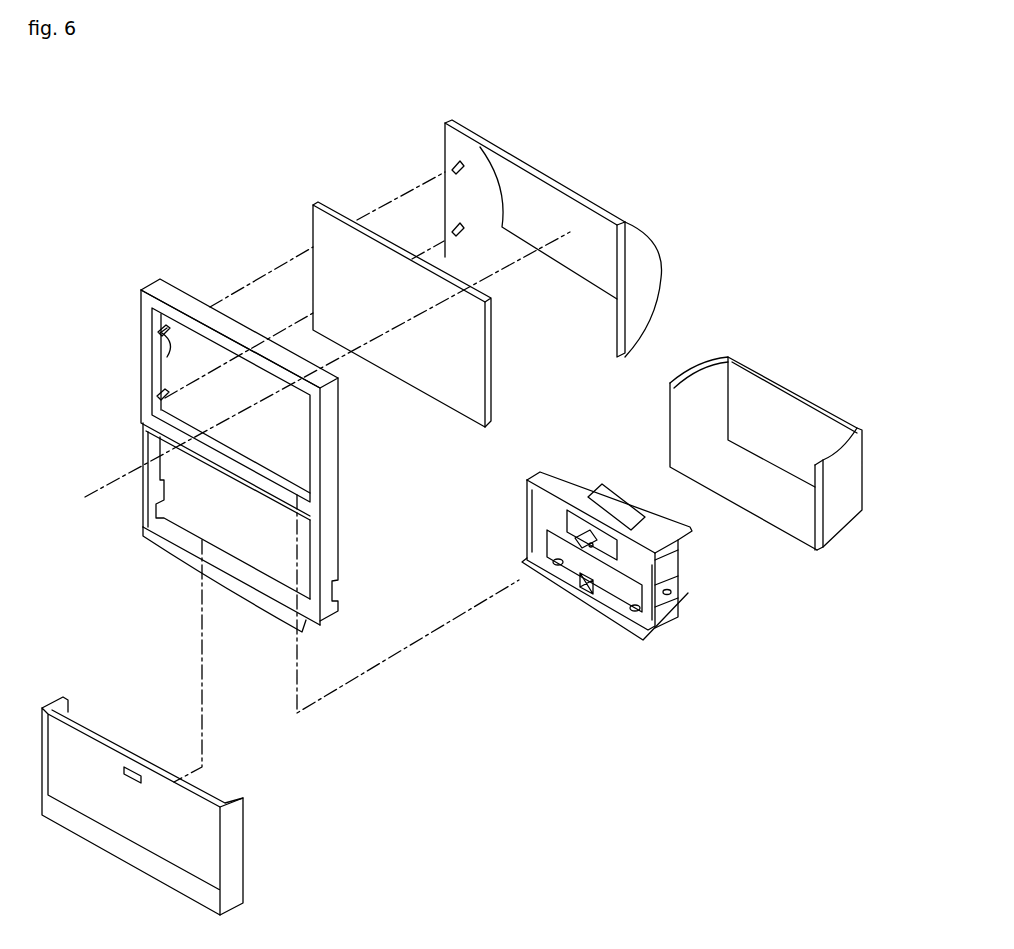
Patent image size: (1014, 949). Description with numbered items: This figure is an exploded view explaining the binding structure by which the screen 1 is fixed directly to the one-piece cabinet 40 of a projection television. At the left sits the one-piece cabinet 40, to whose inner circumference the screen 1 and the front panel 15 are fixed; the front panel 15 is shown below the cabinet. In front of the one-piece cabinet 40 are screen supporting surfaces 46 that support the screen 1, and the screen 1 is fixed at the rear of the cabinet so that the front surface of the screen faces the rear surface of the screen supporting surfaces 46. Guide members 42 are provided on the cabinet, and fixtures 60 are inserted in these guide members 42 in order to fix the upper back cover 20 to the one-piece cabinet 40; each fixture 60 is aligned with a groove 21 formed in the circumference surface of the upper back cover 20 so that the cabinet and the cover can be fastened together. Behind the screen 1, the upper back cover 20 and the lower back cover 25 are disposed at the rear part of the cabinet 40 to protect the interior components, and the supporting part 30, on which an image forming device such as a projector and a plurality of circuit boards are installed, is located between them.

The screen 1 is at (313, 217).
The front panel 15 is at (236, 864).
The upper back cover 20 is at (636, 256).
The groove 21 is at (453, 168).
The lower back cover 25 is at (842, 510).
The supporting part 30 is at (672, 533).
The one-piece cabinet 40 is at (170, 292).
The guide members 42 is at (160, 328).
The screen supporting surfaces 46 is at (148, 337).
The fixture 60 is at (167, 357).